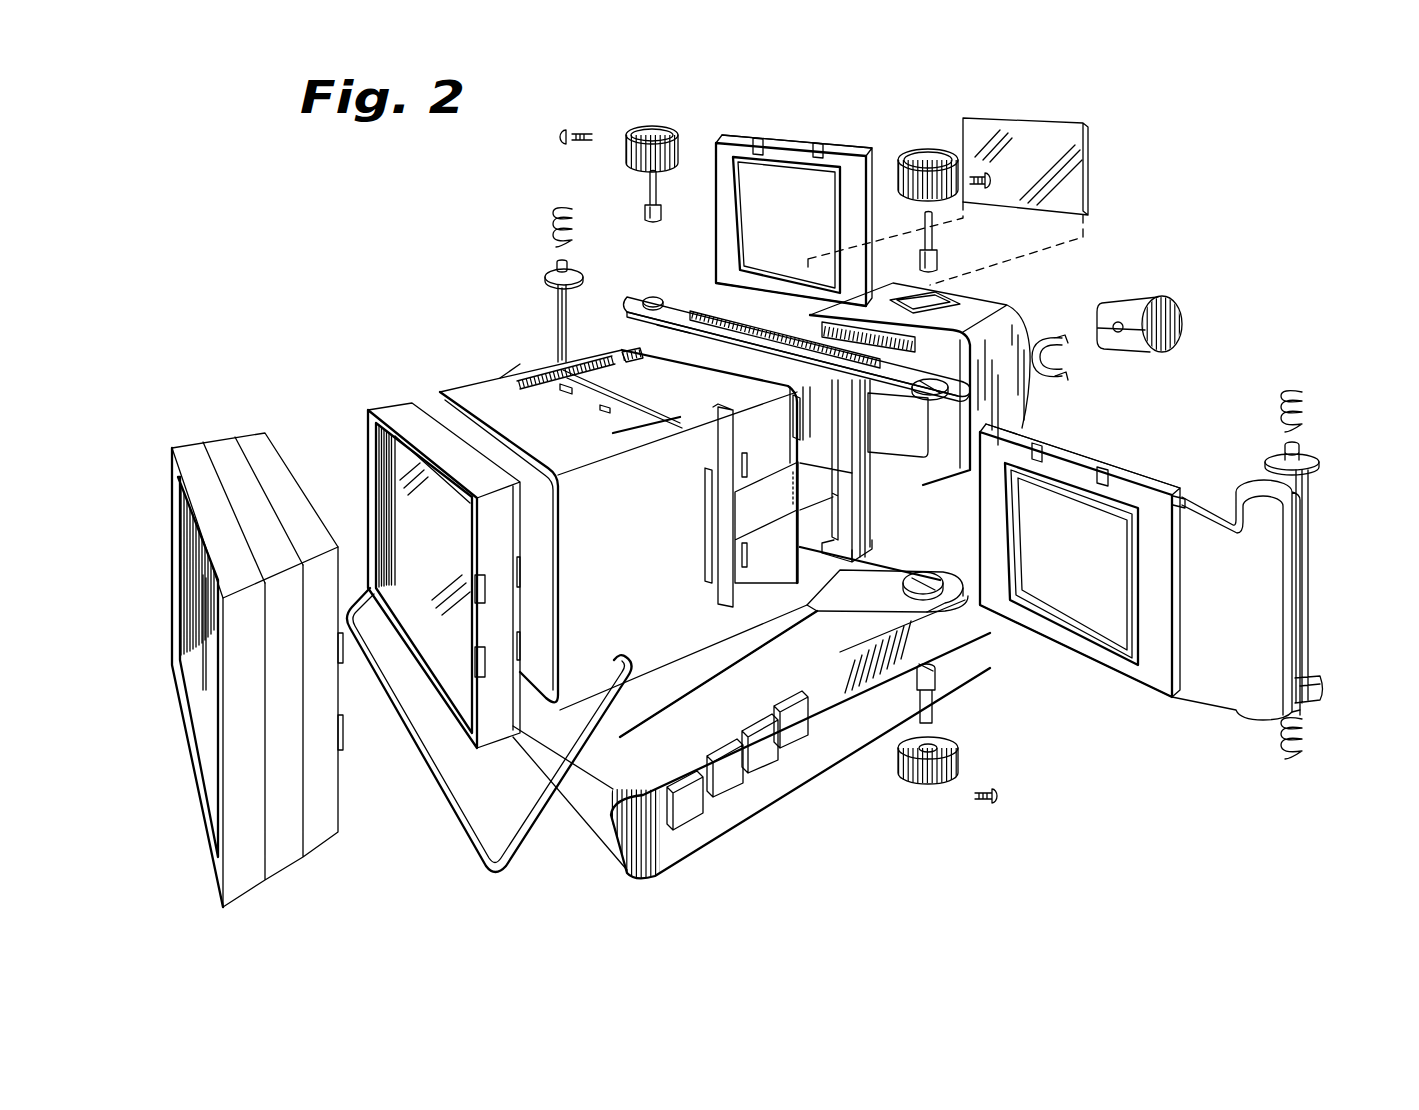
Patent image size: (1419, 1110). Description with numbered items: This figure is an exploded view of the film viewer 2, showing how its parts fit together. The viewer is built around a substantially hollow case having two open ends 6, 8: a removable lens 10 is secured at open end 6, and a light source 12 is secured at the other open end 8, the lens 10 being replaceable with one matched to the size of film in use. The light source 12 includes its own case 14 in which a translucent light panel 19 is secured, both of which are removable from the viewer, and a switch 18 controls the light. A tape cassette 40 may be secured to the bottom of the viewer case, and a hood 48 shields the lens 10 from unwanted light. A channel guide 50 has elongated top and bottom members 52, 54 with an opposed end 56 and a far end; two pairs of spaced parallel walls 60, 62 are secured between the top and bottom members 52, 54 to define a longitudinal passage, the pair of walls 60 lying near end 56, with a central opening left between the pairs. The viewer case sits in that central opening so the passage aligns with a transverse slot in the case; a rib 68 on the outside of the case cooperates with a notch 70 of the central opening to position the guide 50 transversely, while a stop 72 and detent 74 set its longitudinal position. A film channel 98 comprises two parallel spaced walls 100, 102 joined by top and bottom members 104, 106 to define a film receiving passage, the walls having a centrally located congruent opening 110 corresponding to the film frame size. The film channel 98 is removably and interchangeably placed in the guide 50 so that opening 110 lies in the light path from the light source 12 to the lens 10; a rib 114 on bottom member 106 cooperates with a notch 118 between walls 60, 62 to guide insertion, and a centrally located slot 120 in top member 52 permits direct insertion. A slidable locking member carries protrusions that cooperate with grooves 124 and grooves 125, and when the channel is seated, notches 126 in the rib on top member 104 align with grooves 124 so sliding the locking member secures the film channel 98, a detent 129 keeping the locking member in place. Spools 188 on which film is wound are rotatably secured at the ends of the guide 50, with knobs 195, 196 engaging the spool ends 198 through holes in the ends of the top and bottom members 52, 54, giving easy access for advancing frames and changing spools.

The film viewer 2 is at (503, 334).
The open end 6 is at (441, 394).
The open end 8 is at (723, 505).
The lens 10 is at (388, 407).
The light source 12 is at (940, 355).
The case 14 is at (1017, 330).
The switch 18 is at (913, 298).
The translucent light panel 19 is at (1088, 150).
The tape cassette 40 is at (823, 718).
The hood 48 is at (237, 435).
The channel guide 50 is at (781, 300).
The top member 52 is at (665, 295).
The bottom member 54 is at (868, 608).
The end 56 is at (641, 296).
The pair of walls 60 is at (670, 330).
The pair of walls 62 is at (847, 531).
The rib 68 is at (767, 507).
The notch 70 is at (879, 471).
The stop 72 is at (707, 568).
The detent 74 is at (748, 460).
The film channel 98 is at (947, 406).
The wall 100 is at (725, 222).
The wall 102 is at (876, 205).
The top member 104 is at (866, 150).
The bottom member 106 is at (743, 297).
The opening 110 is at (763, 185).
The rib 114 is at (1180, 700).
The notch 118 is at (875, 548).
The slot 120 is at (736, 328).
The grooves 124 is at (602, 411).
The grooves 125 is at (514, 382).
The notches 126 is at (818, 140).
The detent 129 is at (632, 352).
The spool 188 is at (556, 292).
The knob 195 is at (632, 128).
The knob 196 is at (882, 782).
The end 198 is at (558, 258).